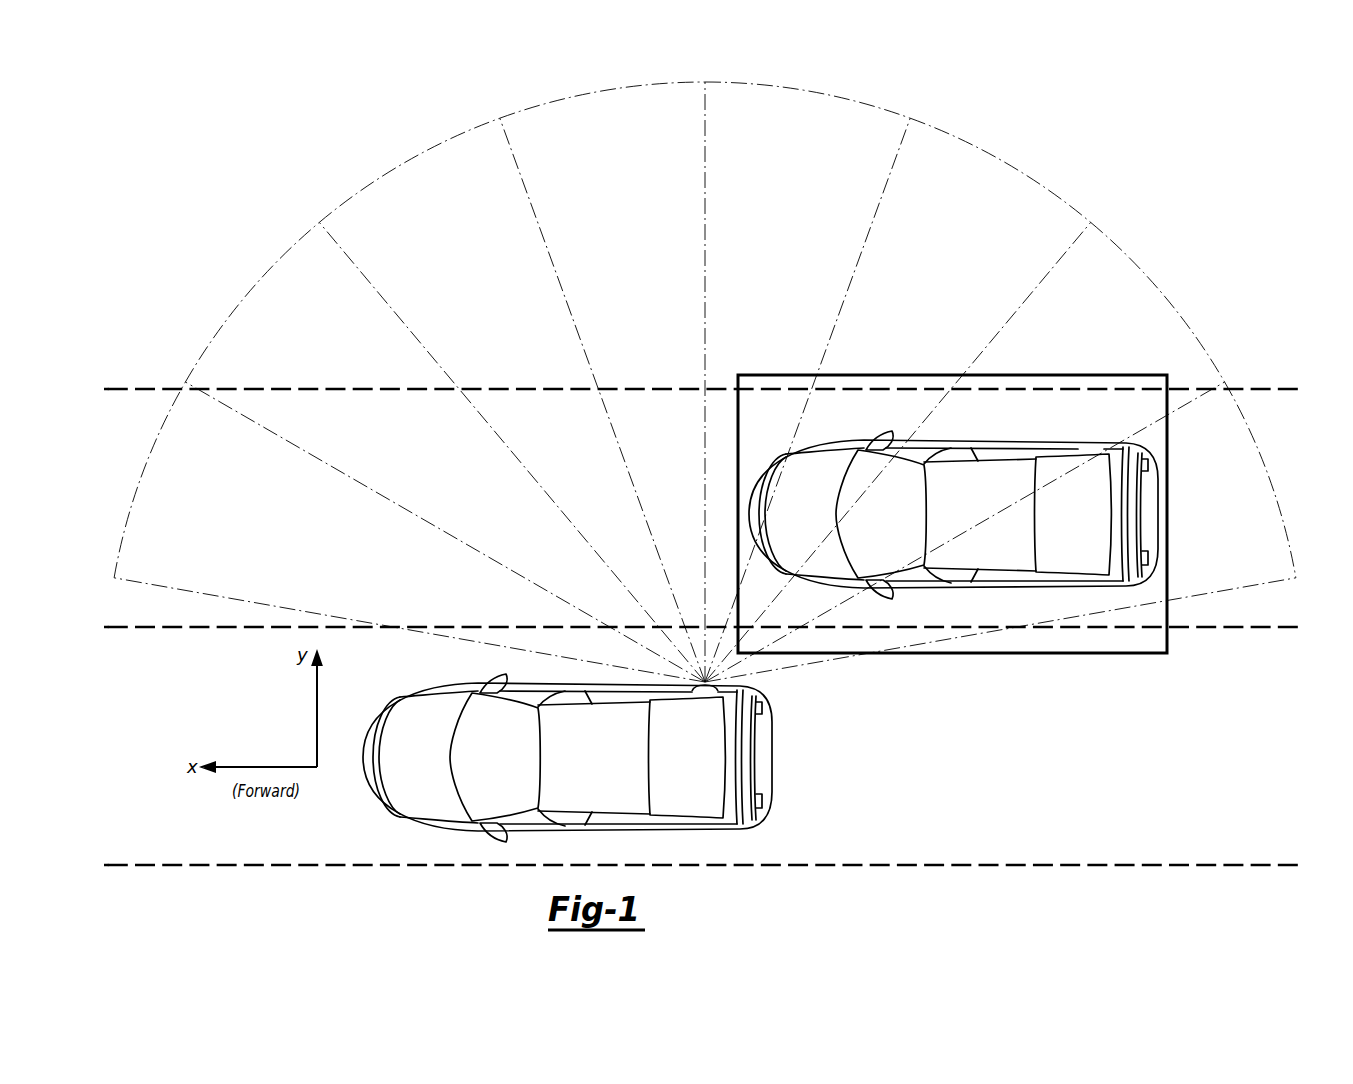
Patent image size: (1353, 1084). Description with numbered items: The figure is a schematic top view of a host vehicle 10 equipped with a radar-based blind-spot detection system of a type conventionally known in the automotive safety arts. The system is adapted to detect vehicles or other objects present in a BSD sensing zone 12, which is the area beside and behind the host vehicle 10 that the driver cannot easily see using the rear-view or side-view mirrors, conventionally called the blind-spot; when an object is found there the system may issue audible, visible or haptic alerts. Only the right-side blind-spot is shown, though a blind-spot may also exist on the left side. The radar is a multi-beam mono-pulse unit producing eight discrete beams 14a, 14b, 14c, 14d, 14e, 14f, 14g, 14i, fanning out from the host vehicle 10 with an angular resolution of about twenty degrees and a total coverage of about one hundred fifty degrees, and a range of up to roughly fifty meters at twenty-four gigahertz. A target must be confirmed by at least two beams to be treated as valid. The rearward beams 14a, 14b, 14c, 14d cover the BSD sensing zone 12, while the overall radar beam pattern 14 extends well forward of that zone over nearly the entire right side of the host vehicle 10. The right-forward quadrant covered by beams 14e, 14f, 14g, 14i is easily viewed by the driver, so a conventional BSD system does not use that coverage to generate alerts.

The host vehicle 10 is at (413, 718).
The BSD sensing zone 12 is at (1073, 654).
The radar beam pattern 14 is at (705, 382).
The radar beam 14a is at (1000, 532).
The radar beam 14b is at (965, 452).
The radar beam 14c is at (898, 400).
The radar beam 14d is at (807, 382).
The radar beam 14e is at (602, 382).
The radar beam 14f is at (512, 400).
The radar beam 14g is at (445, 452).
The radar beam 14i is at (409, 532).